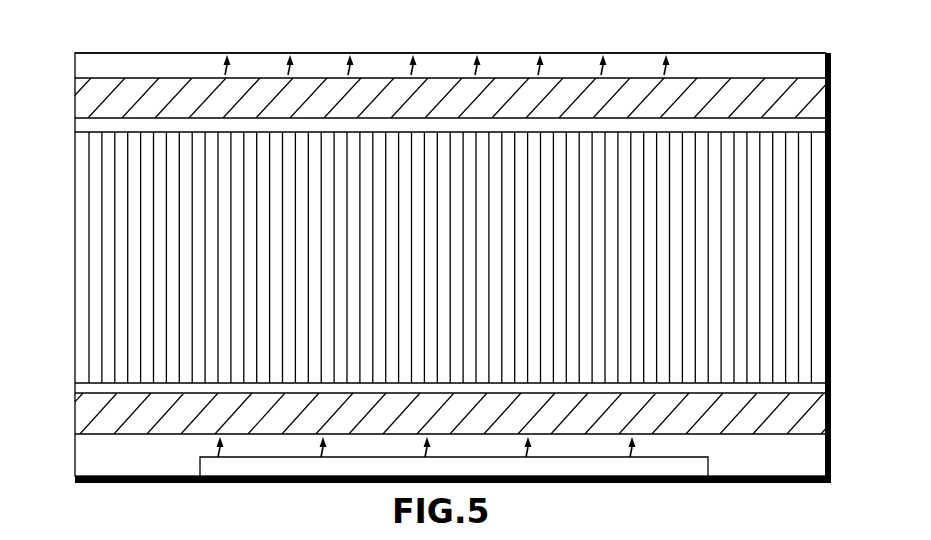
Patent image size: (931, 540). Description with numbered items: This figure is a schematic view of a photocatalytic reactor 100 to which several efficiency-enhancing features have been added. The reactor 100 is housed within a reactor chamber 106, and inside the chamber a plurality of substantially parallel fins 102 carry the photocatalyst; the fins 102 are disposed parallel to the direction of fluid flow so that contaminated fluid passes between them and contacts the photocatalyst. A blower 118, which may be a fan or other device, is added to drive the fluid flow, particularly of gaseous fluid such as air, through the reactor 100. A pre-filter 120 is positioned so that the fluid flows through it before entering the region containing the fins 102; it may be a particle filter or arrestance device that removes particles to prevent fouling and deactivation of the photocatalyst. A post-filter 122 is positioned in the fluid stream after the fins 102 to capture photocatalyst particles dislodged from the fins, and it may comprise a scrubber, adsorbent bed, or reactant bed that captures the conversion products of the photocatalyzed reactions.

The reactor 100 is at (99, 41).
The reactor chamber 106 is at (763, 53).
The post-filter 122 is at (814, 105).
The fins 102 is at (798, 187).
The pre-filter 120 is at (813, 413).
The blower 118 is at (680, 467).